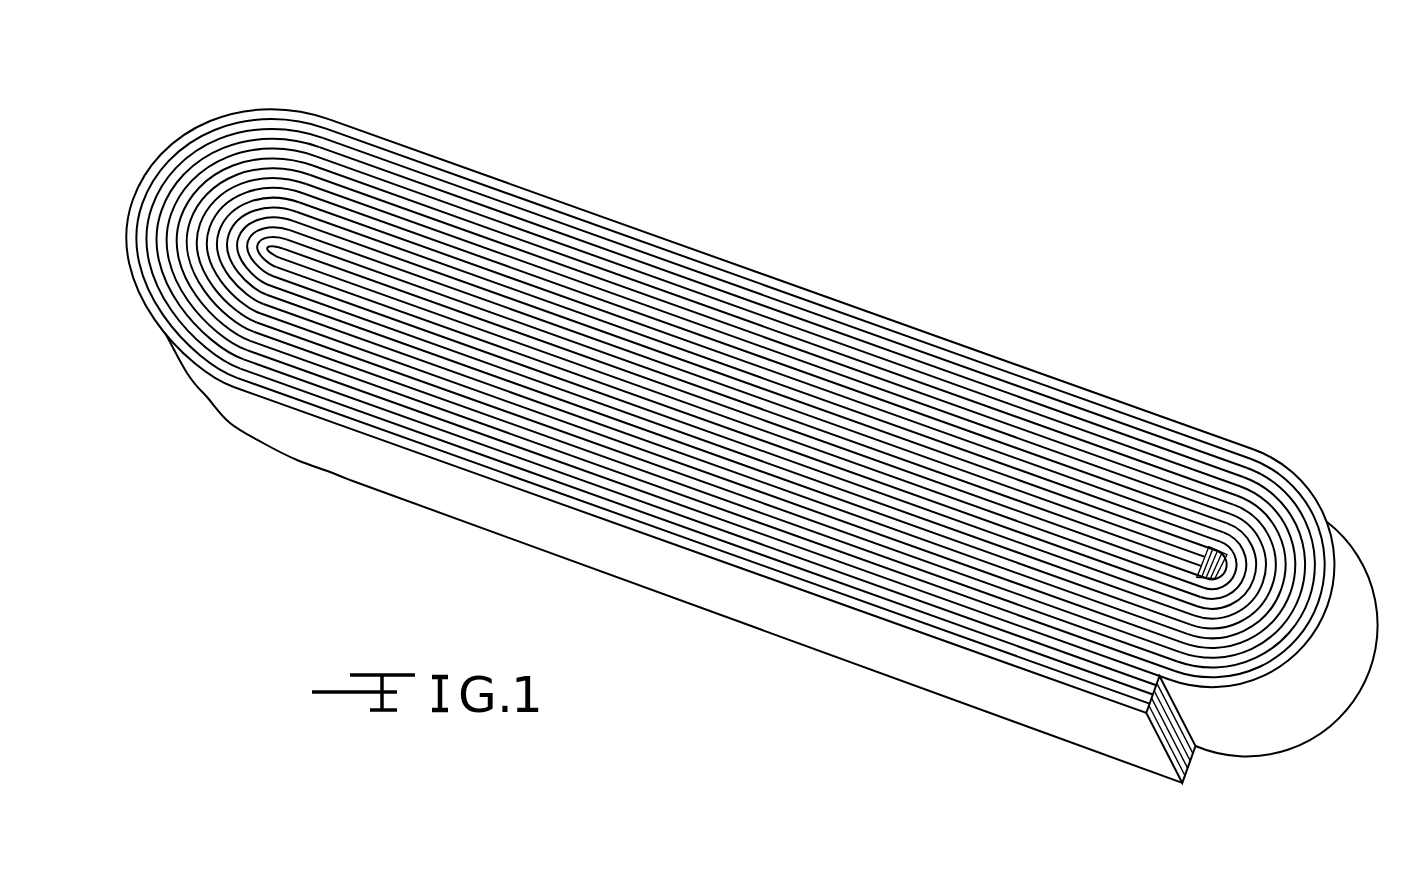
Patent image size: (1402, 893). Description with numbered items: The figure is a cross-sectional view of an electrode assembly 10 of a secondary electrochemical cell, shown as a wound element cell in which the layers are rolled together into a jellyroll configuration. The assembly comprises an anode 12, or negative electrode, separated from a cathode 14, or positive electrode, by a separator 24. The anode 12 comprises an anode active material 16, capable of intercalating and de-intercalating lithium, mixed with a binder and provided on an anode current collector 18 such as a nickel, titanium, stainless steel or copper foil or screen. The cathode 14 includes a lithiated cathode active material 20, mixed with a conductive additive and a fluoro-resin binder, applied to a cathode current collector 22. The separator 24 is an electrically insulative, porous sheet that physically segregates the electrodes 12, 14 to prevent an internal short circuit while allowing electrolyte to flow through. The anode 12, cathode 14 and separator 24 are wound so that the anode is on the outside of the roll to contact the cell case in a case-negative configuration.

The electrode assembly 10 is at (977, 255).
The anode 12 is at (847, 308).
The cathode 14 is at (558, 222).
The anode active material 16 is at (708, 260).
The anode current collector 18 is at (605, 227).
The cathode active material 20 is at (495, 207).
The cathode current collector 22 is at (958, 368).
The separator 24 is at (1047, 397).